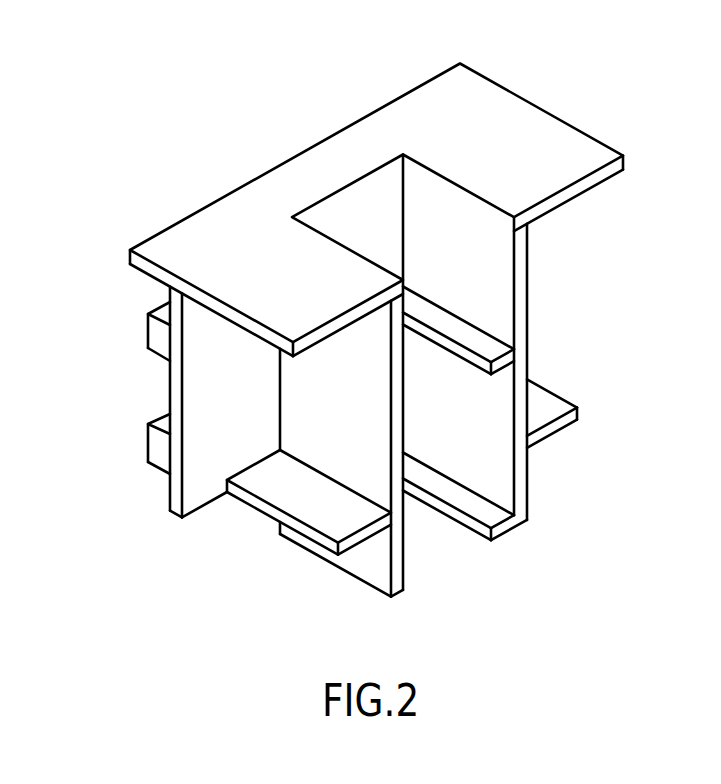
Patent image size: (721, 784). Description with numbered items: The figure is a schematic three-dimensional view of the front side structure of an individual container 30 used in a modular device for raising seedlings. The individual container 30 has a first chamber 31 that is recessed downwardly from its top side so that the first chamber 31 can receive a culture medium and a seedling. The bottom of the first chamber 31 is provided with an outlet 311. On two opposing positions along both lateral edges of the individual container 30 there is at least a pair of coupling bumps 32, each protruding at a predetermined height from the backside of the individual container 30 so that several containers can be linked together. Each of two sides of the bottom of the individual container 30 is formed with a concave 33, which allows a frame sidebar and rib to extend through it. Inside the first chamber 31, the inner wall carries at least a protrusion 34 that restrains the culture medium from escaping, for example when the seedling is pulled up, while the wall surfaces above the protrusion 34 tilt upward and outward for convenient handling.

The individual container 30 is at (578, 96).
The first chamber 31 is at (484, 252).
The outlet 311 is at (430, 542).
The coupling bump 32 is at (163, 333).
The concave 33 is at (233, 515).
The protrusion 34 is at (484, 350).